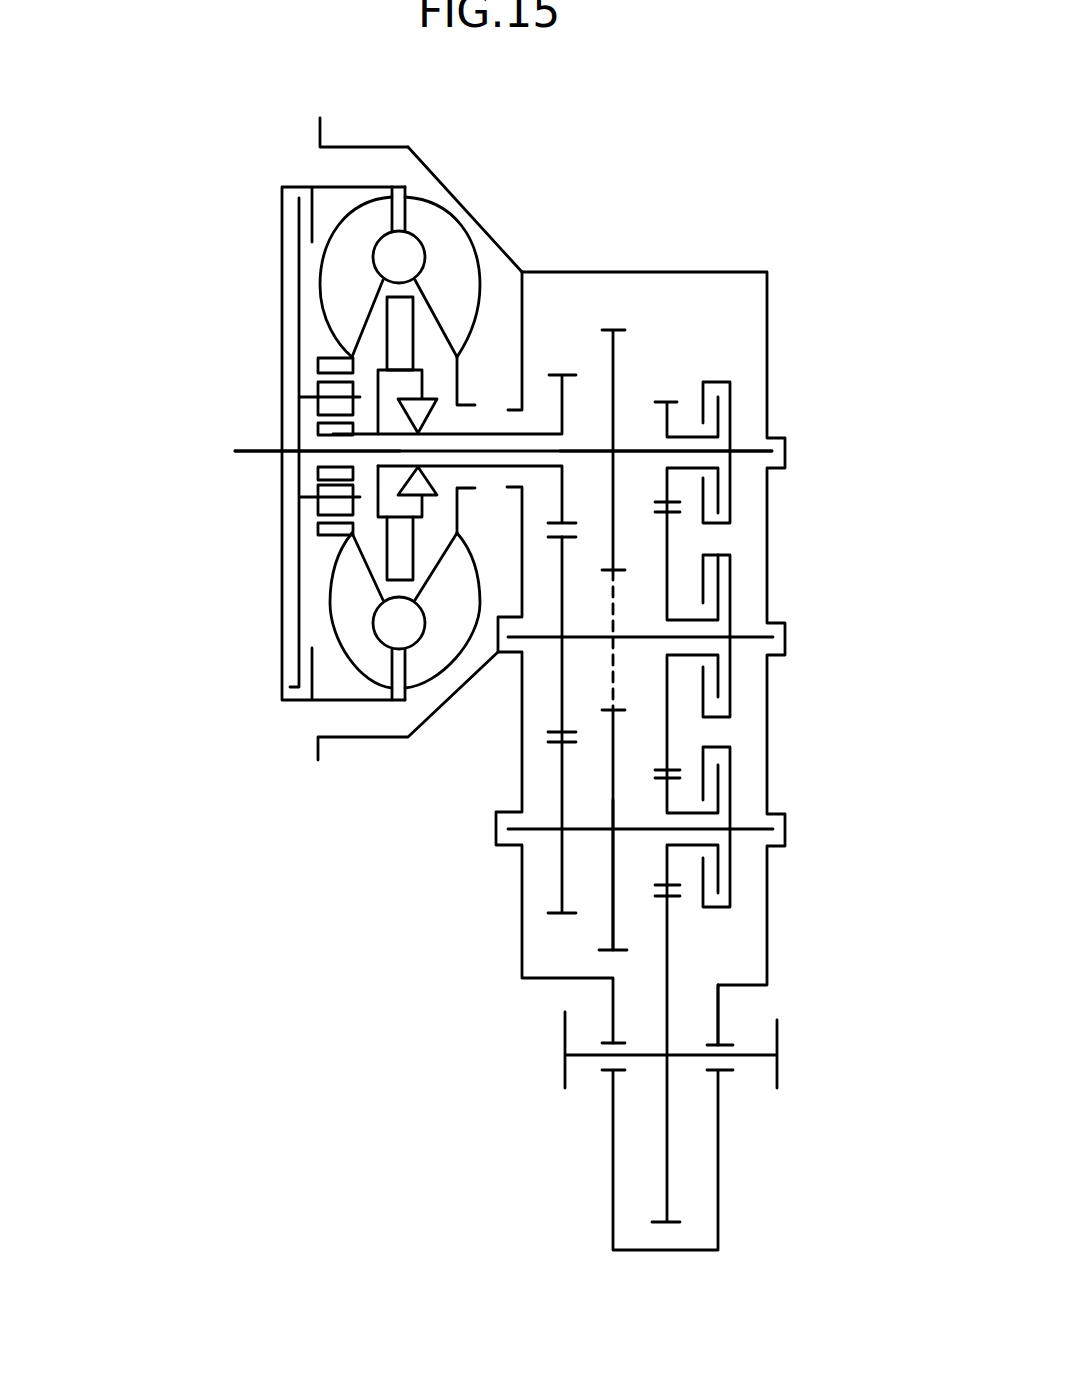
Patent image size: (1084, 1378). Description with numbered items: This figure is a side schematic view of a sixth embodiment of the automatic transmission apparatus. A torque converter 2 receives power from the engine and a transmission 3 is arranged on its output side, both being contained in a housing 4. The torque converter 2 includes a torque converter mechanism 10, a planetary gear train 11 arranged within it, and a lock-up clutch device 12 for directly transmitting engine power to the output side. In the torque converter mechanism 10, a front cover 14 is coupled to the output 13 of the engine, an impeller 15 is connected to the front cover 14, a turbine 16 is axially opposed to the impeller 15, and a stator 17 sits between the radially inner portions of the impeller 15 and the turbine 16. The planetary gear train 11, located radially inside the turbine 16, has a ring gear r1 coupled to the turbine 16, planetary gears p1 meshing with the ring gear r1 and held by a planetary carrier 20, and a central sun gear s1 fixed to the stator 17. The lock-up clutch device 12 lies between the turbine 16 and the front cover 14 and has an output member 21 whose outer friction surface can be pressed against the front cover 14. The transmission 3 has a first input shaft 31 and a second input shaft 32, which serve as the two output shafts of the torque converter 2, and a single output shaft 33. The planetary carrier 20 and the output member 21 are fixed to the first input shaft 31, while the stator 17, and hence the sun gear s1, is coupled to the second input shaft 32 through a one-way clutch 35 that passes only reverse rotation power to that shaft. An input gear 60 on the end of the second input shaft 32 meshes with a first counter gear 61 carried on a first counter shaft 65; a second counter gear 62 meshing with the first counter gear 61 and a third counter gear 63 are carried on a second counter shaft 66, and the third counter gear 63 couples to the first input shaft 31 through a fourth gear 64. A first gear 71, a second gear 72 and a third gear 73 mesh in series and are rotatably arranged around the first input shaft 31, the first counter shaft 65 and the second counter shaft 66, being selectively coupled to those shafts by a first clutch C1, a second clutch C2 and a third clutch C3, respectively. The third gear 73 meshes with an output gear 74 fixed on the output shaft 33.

The torque converter 2 is at (461, 171).
The transmission 3 is at (651, 241).
The housing 4 is at (437, 173).
The torque converter mechanism 10 is at (464, 219).
The planetary gear train 11 is at (332, 450).
The lock-up clutch device 12 is at (284, 216).
The output of the engine 13 is at (260, 449).
The front cover 14 is at (283, 189).
The impeller 15 is at (445, 428).
The turbine 16 is at (355, 428).
The stator 17 is at (397, 302).
The planetary carrier 20 is at (300, 406).
The output member 21 is at (300, 357).
The ring gear r1 is at (325, 364).
The planetary gears p1 is at (325, 405).
The sun gear s1 is at (331, 447).
The first input shaft 31 is at (578, 453).
The second input shaft 32 is at (488, 465).
The output shaft 33 is at (587, 1055).
The one-way clutch 35 is at (420, 487).
The input gear 60 is at (553, 372).
The first counter gear 61 is at (562, 698).
The second counter gear 62 is at (562, 762).
The third counter gear 63 is at (613, 858).
The fourth gear 64 is at (625, 330).
The first counter shaft 65 is at (635, 630).
The second counter shaft 66 is at (633, 800).
The first gear 71 is at (672, 398).
The second gear 72 is at (668, 523).
The third gear 73 is at (668, 798).
The output gear 74 is at (667, 922).
The first clutch C1 is at (717, 413).
The second clutch C2 is at (718, 582).
The third clutch C3 is at (718, 770).